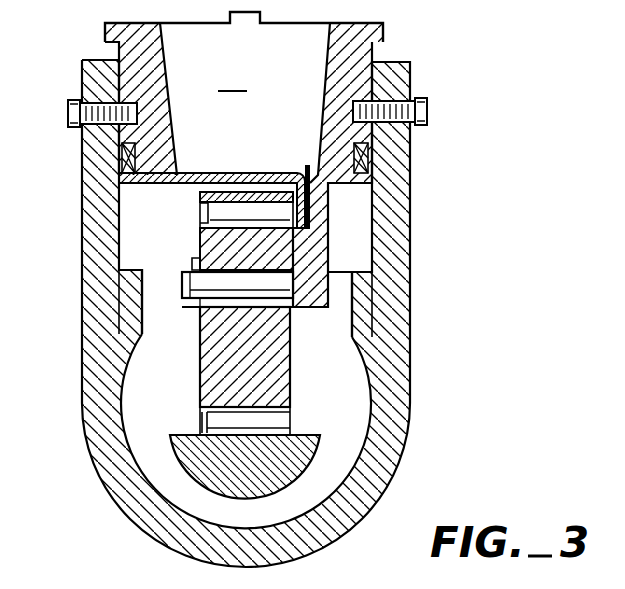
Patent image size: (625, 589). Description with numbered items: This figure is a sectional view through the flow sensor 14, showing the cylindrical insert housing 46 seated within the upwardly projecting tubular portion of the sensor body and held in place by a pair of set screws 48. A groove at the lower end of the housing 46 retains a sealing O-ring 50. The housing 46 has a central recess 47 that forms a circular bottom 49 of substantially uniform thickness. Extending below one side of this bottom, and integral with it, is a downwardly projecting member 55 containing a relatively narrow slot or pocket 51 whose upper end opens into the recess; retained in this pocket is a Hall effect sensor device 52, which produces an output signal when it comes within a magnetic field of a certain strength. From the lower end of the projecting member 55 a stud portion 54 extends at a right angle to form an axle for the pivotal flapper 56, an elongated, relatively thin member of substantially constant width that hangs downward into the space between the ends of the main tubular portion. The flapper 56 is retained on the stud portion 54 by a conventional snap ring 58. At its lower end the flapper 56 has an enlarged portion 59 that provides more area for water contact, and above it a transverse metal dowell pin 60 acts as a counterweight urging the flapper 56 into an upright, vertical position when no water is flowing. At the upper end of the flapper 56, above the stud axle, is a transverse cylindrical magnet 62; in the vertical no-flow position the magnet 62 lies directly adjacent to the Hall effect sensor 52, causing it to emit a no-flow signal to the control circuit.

The valve housing 14 is at (441, 221).
The insert housing 46 is at (385, 32).
The central recess 47 is at (244, 165).
The set screws 48 is at (428, 100).
The circular bottom 49 is at (193, 174).
The sealing O-ring 50 is at (372, 155).
The slot or pocket 51 is at (311, 172).
The Hall effect sensor device 52 is at (372, 183).
The stud portion 54 is at (183, 284).
The downwardly projecting member 55 is at (355, 276).
The pivotal flapper 56 is at (270, 358).
The snap ring 58 is at (140, 338).
The enlarged portion 59 is at (337, 491).
The metal dowell pin 60 is at (288, 420).
The cylindrical magnet 62 is at (217, 218).